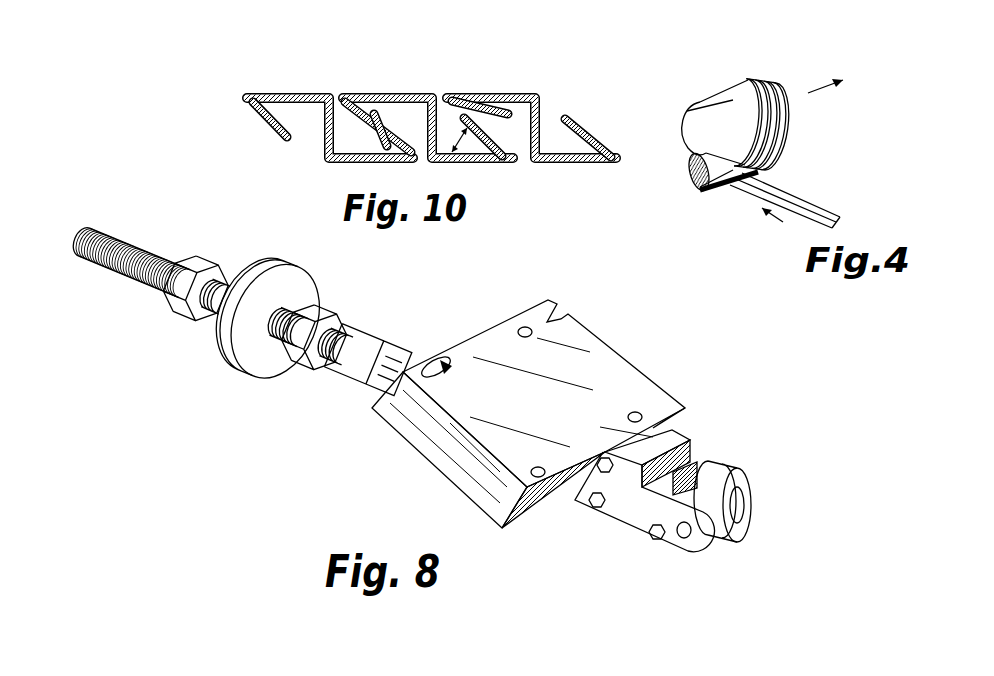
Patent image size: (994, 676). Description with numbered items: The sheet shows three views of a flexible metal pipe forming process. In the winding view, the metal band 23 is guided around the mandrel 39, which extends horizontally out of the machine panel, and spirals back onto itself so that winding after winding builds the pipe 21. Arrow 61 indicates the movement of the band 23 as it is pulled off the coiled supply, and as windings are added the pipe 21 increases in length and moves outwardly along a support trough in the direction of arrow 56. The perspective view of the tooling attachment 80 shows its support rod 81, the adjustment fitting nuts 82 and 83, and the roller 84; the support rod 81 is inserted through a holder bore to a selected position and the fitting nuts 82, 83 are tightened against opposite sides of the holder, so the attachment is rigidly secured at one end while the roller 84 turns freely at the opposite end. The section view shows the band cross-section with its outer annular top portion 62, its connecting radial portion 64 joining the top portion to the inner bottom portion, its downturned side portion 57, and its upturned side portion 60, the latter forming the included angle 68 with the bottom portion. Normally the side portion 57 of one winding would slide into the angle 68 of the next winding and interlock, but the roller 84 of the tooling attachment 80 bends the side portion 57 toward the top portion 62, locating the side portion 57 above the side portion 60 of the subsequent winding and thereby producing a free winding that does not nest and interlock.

In FIG. 10, the outer annular top portion 62 is at (370, 93).
In FIG. 10, the connecting radial portion 64 is at (431, 81).
In FIG. 10, the downturned side portion 57 is at (325, 162).
In FIG. 10, the upturned side portion 60 is at (337, 153).
In FIG. 10, the included angle 68 is at (458, 143).
In FIG. 4, the mandrel 39 is at (693, 118).
In FIG. 4, the pipe 21 is at (773, 167).
In FIG. 4, the metal band 23 is at (829, 197).
In FIG. 4, the arrow 61 is at (780, 222).
In FIG. 4, the arrow 56 is at (812, 92).
In FIG. 8, the tooling attachment 80 is at (690, 331).
In FIG. 8, the support rod 81 is at (133, 285).
In FIG. 8, the adjustment fitting nut 82 is at (183, 325).
In FIG. 8, the adjustment fitting nut 83 is at (312, 368).
In FIG. 8, the roller 84 is at (750, 523).